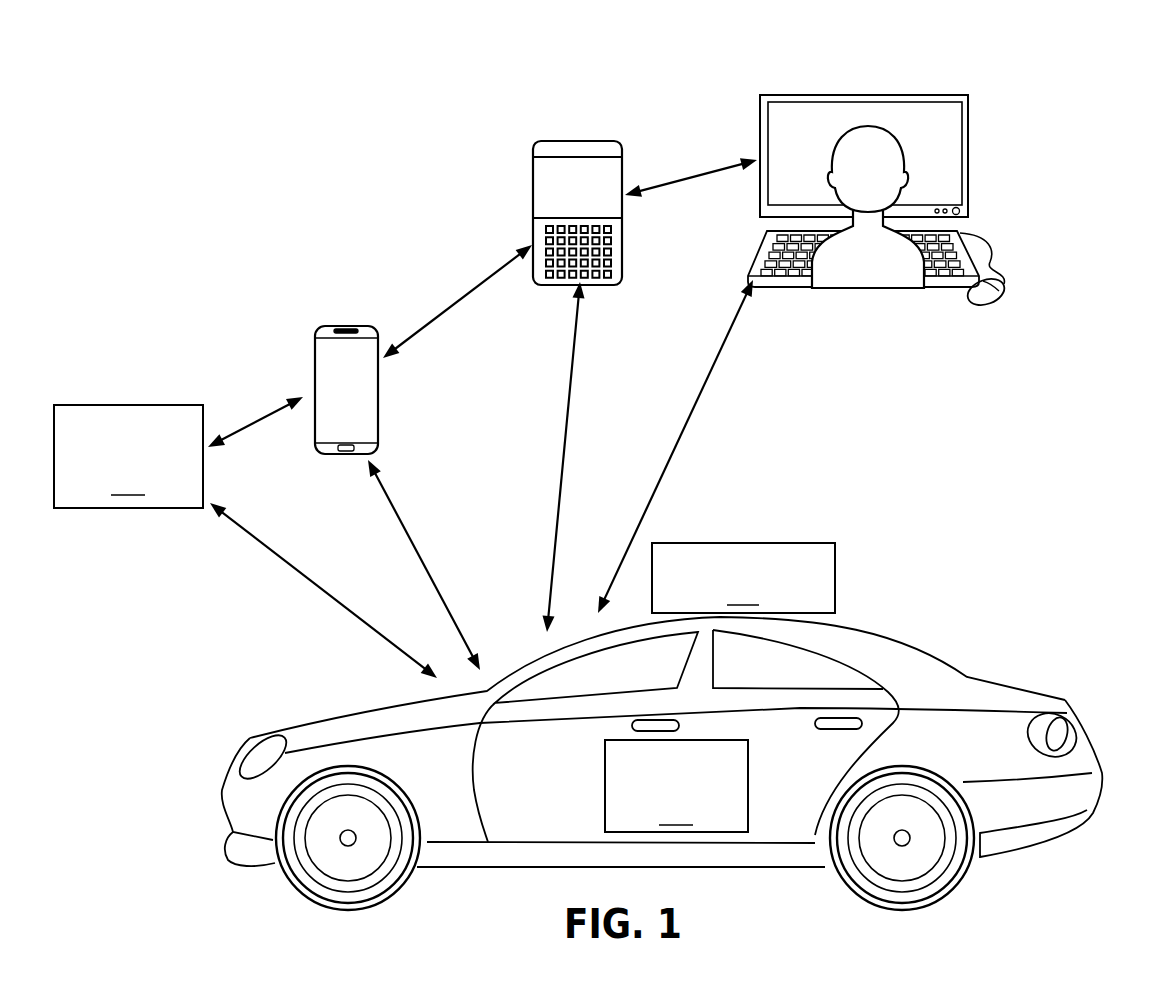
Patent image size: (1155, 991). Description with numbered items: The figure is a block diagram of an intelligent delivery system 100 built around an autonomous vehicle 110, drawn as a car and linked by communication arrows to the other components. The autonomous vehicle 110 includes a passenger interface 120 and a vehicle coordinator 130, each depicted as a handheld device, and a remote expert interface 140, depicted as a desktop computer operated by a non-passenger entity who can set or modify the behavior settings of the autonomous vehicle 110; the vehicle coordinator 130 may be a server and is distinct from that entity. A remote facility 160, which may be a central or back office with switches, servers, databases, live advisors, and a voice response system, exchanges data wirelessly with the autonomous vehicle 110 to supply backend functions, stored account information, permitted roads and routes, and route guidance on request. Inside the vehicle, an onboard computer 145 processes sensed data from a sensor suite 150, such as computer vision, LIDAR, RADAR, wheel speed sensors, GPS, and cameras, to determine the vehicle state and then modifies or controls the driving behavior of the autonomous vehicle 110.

The intelligent delivery system 100 is at (1063, 97).
The autonomous vehicle 110 is at (333, 714).
The passenger interface 120 is at (324, 326).
The vehicle coordinator 130 is at (554, 140).
The remote expert interface 140 is at (792, 95).
The onboard computer 145 is at (676, 786).
The sensor suite 150 is at (743, 578).
The remote facility 160 is at (128, 456).